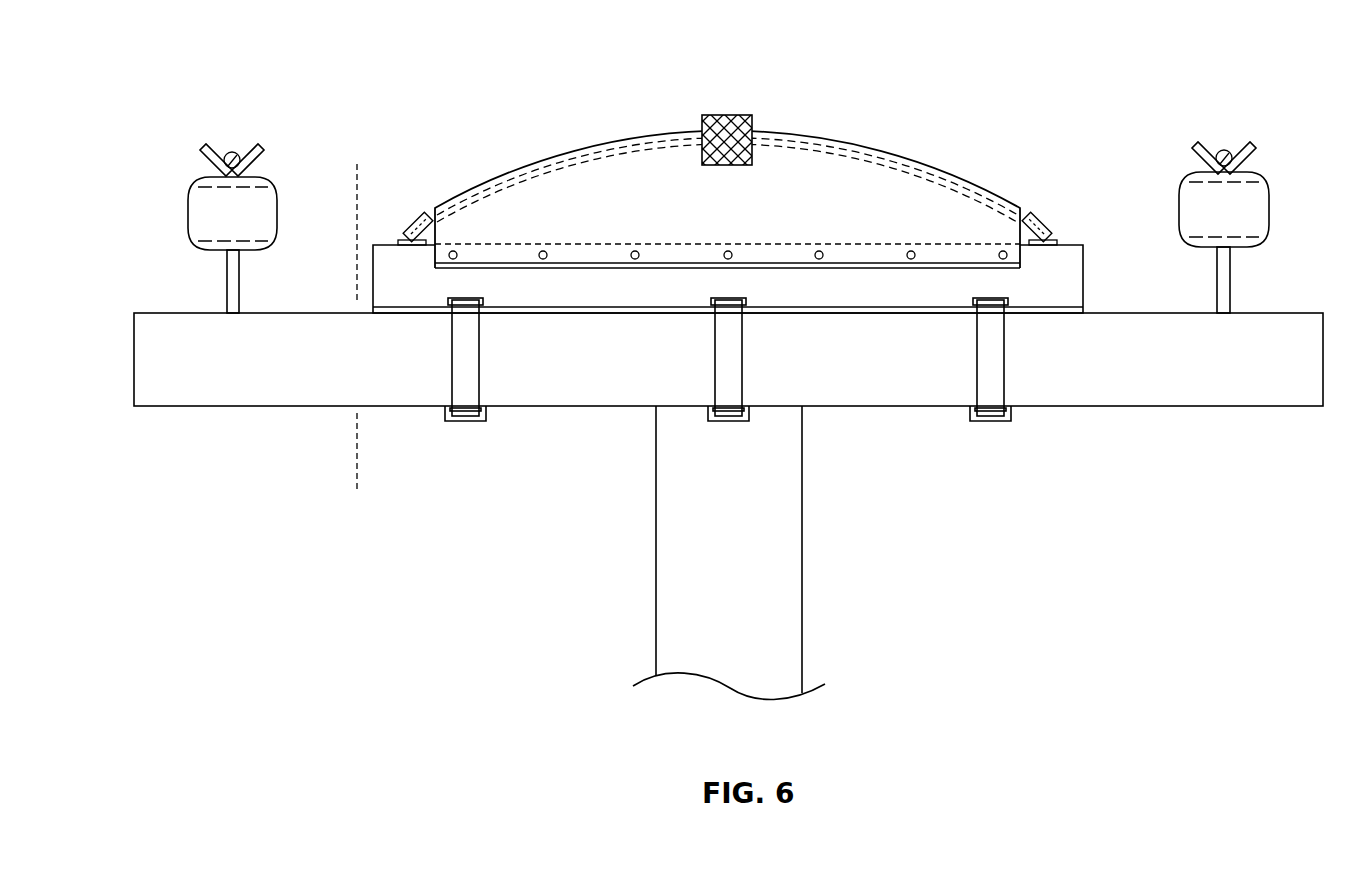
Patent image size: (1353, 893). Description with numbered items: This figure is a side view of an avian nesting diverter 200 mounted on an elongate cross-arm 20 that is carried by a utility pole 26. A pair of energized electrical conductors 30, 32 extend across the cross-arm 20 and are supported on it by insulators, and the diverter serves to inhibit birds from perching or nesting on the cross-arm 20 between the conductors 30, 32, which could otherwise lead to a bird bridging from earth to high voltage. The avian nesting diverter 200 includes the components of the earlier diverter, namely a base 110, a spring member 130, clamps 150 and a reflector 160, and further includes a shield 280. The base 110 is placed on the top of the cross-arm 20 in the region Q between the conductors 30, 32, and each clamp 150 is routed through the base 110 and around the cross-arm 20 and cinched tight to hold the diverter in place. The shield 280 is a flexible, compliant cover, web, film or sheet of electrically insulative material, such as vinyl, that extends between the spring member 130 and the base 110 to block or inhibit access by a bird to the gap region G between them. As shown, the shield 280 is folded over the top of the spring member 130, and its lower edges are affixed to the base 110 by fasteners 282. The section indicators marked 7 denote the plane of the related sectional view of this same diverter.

The cross-arm 20 is at (1137, 385).
The utility pole 26 is at (790, 573).
The electrical conductor 30 is at (231, 156).
The electrical conductor 32 is at (1222, 153).
The base 110 is at (382, 273).
The spring member 130 is at (566, 152).
The clamp 150 is at (465, 370).
The reflector 160 is at (728, 115).
The avian nesting diverter 200 is at (840, 68).
The shield 280 is at (918, 178).
The fasteners 282 is at (543, 262).
The gap region G is at (832, 169).
The region Q is at (1042, 190).
The section line 7- 7 is at (357, 164).